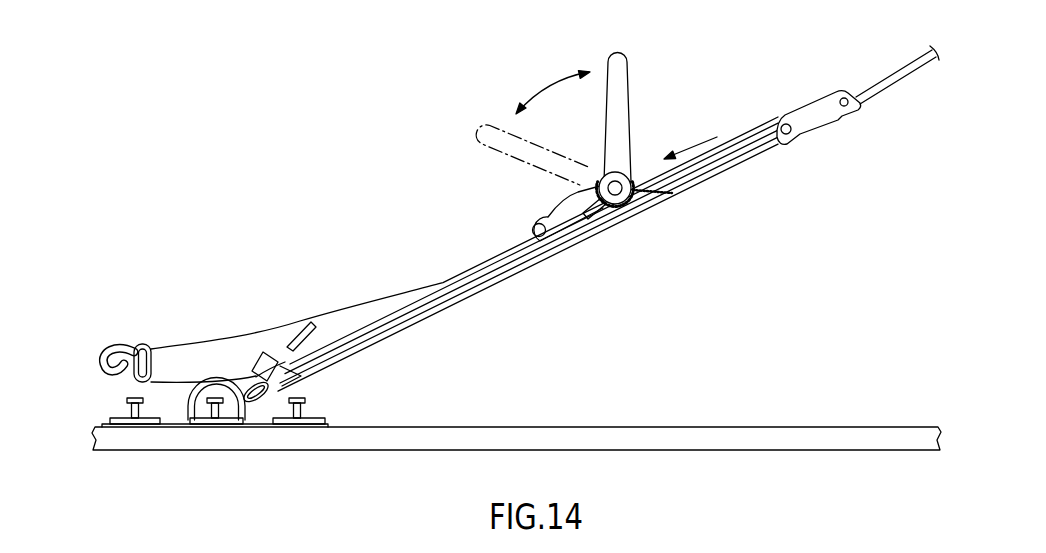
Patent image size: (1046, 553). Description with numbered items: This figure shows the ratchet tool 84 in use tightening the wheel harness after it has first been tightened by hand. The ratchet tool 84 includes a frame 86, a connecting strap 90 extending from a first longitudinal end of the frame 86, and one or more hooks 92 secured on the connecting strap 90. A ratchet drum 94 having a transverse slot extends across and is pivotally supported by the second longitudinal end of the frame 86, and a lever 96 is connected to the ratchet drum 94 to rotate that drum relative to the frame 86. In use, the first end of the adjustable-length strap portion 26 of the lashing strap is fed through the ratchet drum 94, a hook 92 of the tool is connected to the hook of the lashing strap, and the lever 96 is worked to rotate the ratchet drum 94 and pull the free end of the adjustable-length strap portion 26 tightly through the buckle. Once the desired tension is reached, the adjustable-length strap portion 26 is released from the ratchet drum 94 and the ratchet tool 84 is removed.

The adjustable-length strap portion 26 is at (412, 322).
The ratchet tool 84 is at (512, 192).
The frame 86 is at (568, 216).
The connecting strap 90 is at (443, 282).
The hook 92 is at (257, 377).
The ratchet drum 94 is at (672, 193).
The lever 96 is at (622, 80).